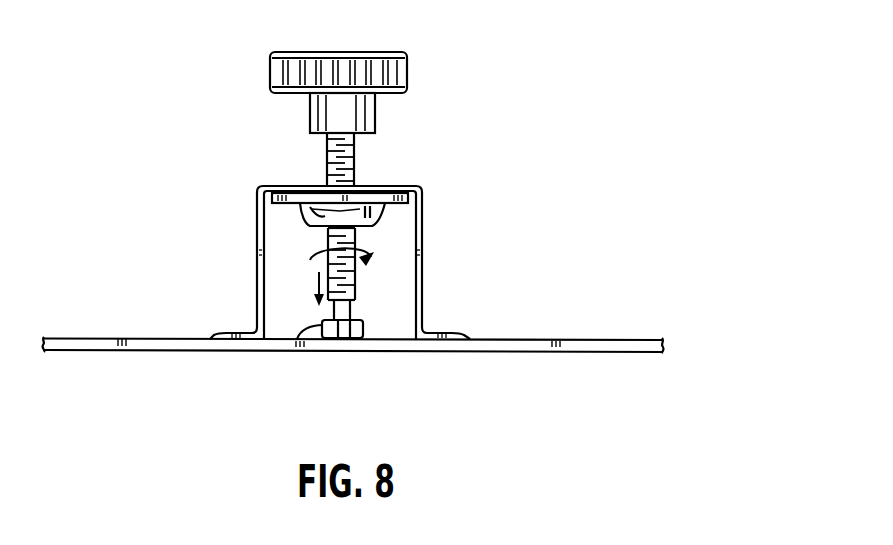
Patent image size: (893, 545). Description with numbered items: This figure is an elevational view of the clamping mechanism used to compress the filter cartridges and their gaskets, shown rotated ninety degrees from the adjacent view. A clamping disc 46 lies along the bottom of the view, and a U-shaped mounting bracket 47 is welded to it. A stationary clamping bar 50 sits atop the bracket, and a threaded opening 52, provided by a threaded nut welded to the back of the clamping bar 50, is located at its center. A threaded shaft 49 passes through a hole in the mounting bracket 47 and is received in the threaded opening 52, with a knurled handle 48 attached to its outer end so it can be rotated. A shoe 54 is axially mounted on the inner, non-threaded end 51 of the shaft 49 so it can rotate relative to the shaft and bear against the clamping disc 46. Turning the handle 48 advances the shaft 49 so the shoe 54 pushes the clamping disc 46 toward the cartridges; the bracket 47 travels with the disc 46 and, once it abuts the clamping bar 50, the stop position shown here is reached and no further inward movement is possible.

The clamping disc 46 is at (127, 351).
The mounting bracket 47 is at (257, 208).
The handle 48 is at (409, 72).
The threaded shaft 49 is at (357, 165).
The clamping bar 50 is at (297, 201).
The non-threaded end 51 is at (355, 313).
The threaded opening 52 is at (333, 233).
The shoe 54 is at (297, 340).